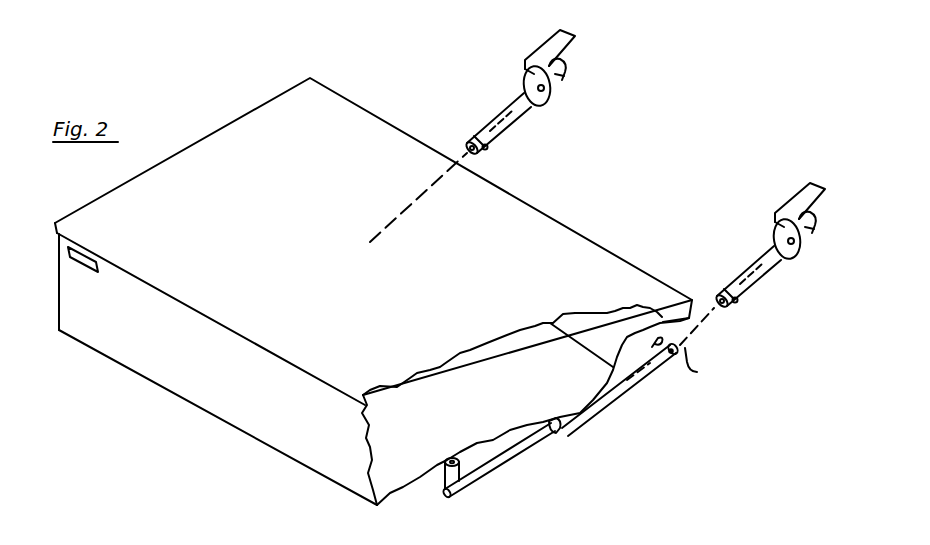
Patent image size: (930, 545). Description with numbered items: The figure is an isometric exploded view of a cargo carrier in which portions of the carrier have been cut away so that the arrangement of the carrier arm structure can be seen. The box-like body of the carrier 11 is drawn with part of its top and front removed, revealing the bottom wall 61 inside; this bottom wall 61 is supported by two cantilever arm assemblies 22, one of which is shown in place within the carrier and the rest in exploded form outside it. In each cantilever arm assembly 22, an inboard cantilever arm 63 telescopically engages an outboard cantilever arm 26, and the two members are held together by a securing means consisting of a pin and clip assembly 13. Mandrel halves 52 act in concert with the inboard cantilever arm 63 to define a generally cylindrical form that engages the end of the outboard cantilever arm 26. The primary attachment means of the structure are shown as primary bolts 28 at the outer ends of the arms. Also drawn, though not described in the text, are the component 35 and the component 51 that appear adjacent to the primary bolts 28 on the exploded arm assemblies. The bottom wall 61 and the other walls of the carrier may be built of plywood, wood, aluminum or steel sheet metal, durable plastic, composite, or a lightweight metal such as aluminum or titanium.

The housing / enclosure 11 is at (266, 102).
The pin and clip assembly 13 is at (690, 354).
The cantilever arm assembly 22 is at (510, 135).
The outboard cantilever arm 26 is at (511, 460).
The primary bolts 28 is at (552, 88).
The mounting bracket 35 is at (562, 35).
The bracket flange 51 is at (796, 251).
The mandrel halves 52 is at (720, 300).
The bottom wall 61 is at (388, 496).
The inboard cantilever arm 63 is at (513, 104).